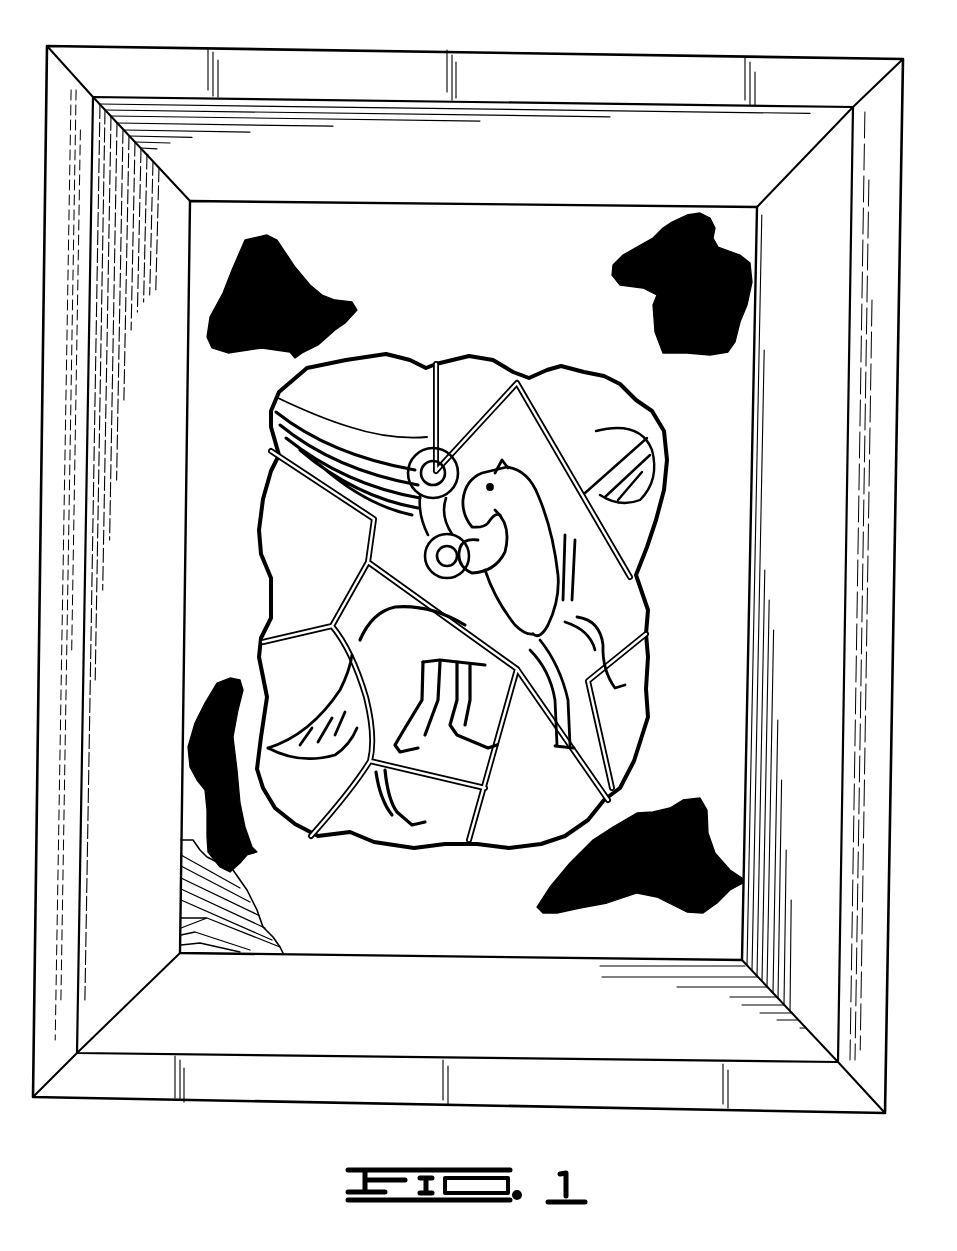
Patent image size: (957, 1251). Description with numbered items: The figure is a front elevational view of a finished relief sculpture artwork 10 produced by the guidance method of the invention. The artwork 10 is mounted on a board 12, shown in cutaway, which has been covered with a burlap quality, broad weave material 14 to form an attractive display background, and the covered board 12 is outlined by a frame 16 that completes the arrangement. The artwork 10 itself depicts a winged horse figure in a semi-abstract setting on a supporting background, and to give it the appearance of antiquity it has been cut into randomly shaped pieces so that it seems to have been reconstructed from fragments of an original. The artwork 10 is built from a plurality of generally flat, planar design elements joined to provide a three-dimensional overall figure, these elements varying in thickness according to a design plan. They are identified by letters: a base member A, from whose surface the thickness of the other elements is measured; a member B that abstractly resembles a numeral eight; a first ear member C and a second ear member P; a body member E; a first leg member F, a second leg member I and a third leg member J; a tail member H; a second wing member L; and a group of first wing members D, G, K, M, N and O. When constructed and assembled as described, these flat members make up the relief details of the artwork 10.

The artwork 10 is at (462, 577).
The board 12 is at (207, 935).
The broad weave material 14 is at (414, 912).
The frame 16 is at (688, 53).
The base member A is at (608, 356).
The member resembling a numeral eight B is at (413, 565).
The first ear member C is at (521, 441).
The first wing member D is at (374, 437).
The body member E is at (510, 605).
The first leg member F is at (528, 654).
The first wing member G is at (350, 447).
The tail member H is at (340, 706).
The second leg member I is at (444, 693).
The third leg member J is at (570, 627).
The first wing member K is at (324, 452).
The second wing member L is at (584, 527).
The first wing member M is at (374, 475).
The first wing member N is at (356, 489).
The first wing member O is at (395, 508).
The second ear member P is at (483, 440).